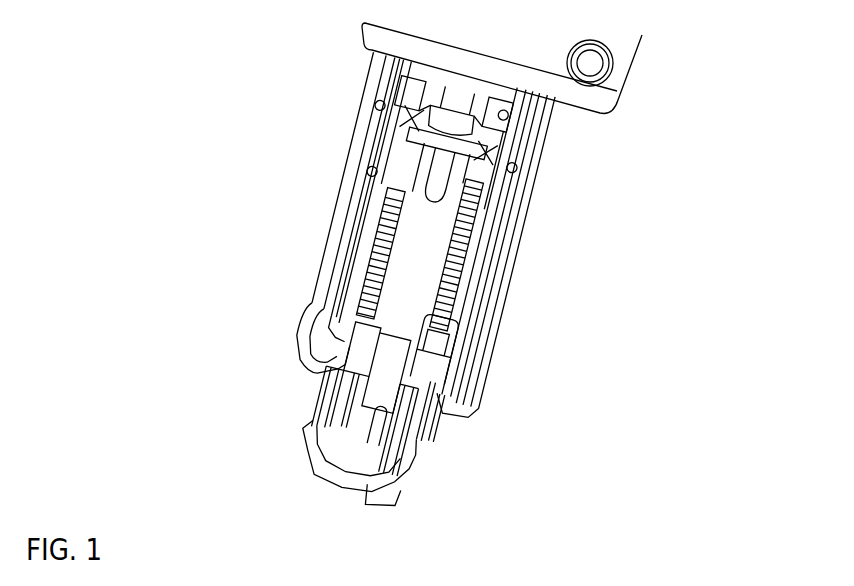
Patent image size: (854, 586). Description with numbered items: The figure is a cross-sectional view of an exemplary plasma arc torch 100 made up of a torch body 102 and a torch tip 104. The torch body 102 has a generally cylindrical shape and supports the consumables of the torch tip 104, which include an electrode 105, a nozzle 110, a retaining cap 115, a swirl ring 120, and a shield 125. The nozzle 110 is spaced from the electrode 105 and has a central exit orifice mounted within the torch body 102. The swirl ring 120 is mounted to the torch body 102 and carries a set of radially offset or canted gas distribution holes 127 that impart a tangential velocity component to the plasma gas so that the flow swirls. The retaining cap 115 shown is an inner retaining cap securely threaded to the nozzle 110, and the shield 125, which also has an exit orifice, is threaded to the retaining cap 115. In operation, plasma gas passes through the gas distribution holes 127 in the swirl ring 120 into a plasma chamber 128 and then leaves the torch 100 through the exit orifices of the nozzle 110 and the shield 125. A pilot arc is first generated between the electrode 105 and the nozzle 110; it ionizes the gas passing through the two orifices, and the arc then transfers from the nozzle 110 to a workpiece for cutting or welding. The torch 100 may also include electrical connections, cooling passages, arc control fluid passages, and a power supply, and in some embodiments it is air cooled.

The plasma arc torch 100 is at (206, 110).
The torch body 102 is at (633, 98).
The torch tip 104 is at (650, 132).
The electrode 105 is at (390, 360).
The nozzle 110 is at (412, 423).
The retaining cap 115 is at (333, 343).
The swirl ring 120 is at (463, 240).
The shield 125 is at (385, 493).
The gas distribution holes 127 is at (420, 330).
The plasma chamber 128 is at (352, 428).